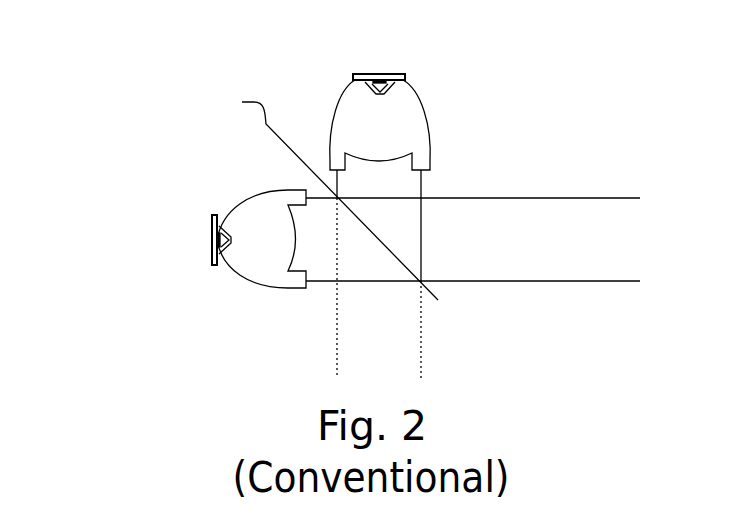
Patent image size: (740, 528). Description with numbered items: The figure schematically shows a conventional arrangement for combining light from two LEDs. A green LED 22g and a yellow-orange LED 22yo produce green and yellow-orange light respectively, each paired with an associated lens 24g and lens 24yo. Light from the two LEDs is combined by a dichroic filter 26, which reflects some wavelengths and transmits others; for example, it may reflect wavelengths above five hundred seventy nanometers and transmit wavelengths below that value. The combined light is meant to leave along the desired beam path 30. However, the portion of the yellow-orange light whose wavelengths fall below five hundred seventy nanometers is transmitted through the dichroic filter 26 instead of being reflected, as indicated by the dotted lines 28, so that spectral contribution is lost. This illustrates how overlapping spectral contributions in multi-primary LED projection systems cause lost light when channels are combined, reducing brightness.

The yellow-orange LED 22yo is at (382, 75).
The lens associated with yellow-orange LED 24yo is at (418, 100).
The green LED 22g is at (215, 233).
The lens associated with green LED 24g is at (214, 282).
The dichroic filter 26 is at (329, 195).
The dotted lines 28 is at (337, 356).
The desired beam path 30 is at (475, 198).